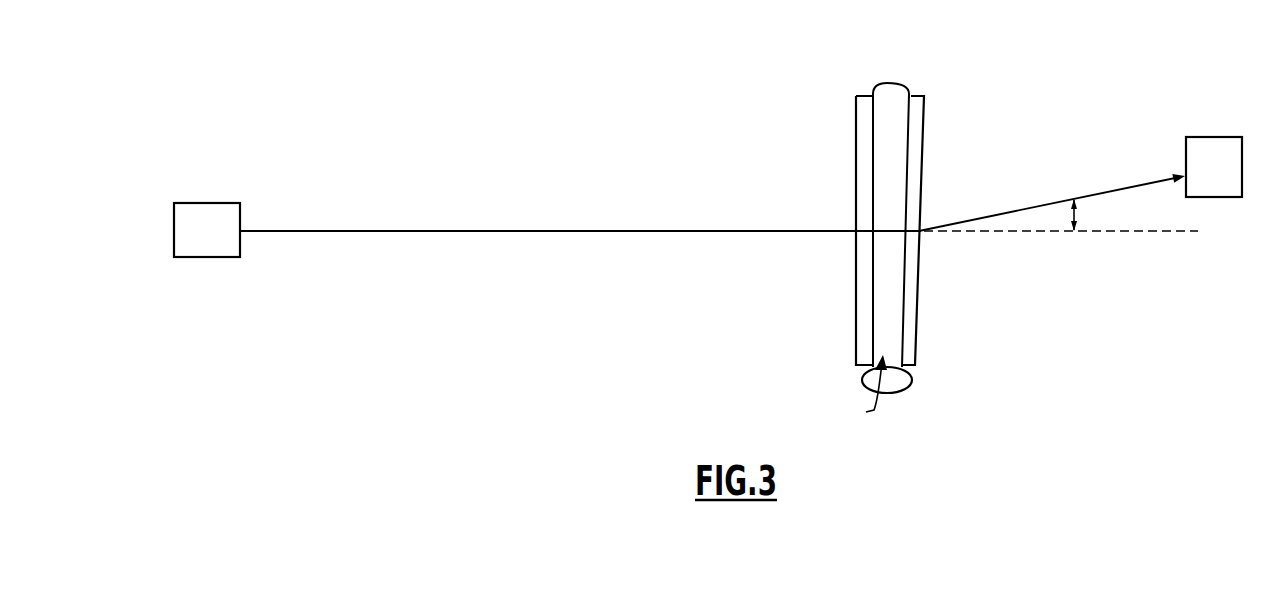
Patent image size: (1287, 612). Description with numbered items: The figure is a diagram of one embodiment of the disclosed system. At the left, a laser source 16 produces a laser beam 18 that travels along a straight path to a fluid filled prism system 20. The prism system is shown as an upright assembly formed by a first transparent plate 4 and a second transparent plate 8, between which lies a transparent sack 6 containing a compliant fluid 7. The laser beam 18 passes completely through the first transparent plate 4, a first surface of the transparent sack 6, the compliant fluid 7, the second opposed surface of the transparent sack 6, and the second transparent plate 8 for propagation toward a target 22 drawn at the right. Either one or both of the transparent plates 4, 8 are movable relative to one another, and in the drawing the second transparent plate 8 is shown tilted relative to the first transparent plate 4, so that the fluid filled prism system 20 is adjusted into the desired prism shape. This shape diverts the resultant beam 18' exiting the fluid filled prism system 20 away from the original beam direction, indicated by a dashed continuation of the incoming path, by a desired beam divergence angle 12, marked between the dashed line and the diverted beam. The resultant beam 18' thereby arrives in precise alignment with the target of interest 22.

The laser source 16 is at (207, 217).
The laser beam 18 is at (580, 266).
The first transparent plate 4 is at (862, 118).
The second transparent plate 8 is at (924, 128).
The fluid filled prism system 20 is at (887, 83).
The transparent sack 6 is at (908, 398).
The compliant fluid 7 is at (869, 392).
The resultant beam 18' is at (1052, 178).
The target 22 is at (1222, 155).
The beam divergence angle 12 is at (1162, 211).